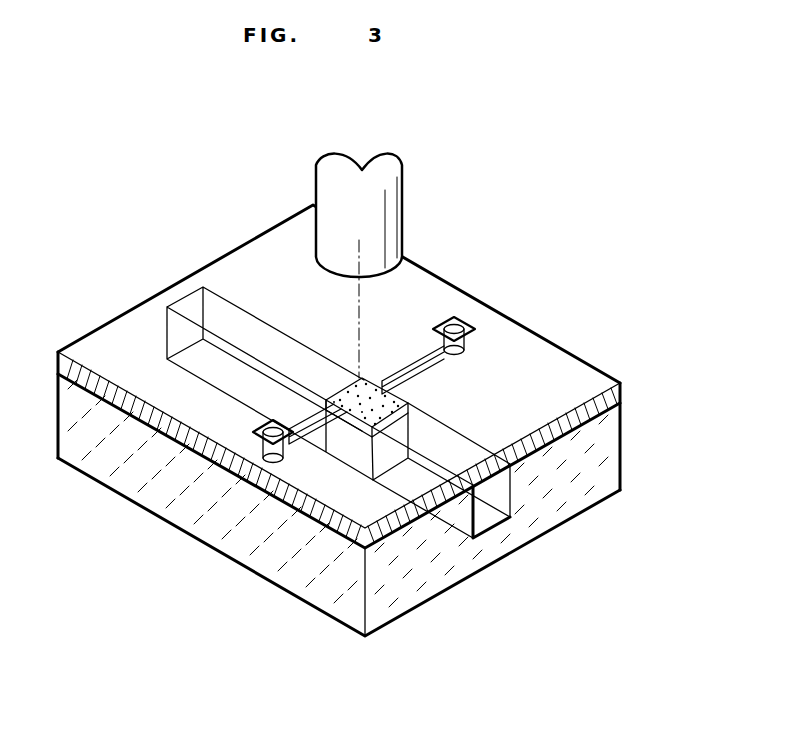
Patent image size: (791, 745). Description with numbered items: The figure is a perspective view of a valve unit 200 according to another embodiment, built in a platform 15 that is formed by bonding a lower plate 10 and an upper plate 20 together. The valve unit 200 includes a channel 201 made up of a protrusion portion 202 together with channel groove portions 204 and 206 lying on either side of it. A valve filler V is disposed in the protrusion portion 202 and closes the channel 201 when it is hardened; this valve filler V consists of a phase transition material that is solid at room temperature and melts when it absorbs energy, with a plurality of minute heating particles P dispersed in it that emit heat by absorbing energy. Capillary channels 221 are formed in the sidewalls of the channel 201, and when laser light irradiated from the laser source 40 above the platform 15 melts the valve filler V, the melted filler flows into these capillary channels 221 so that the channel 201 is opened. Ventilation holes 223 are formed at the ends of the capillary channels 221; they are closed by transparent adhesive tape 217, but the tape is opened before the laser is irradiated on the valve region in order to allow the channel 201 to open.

The valve unit 200 is at (391, 380).
The platform 15 is at (391, 420).
The upper plate 20 is at (620, 393).
The lower plate 10 is at (675, 383).
The laser source 40 is at (400, 203).
The channel 201 is at (301, 462).
The protrusion portion 202 is at (345, 452).
The channel groove portion 204 is at (207, 368).
The channel groove portion 206 is at (400, 480).
The transparent adhesive tape 217 is at (273, 419).
The capillary channels 221 is at (320, 426).
The ventilation holes 223 is at (260, 462).
The heating particles P is at (378, 397).
The valve filler V is at (340, 377).